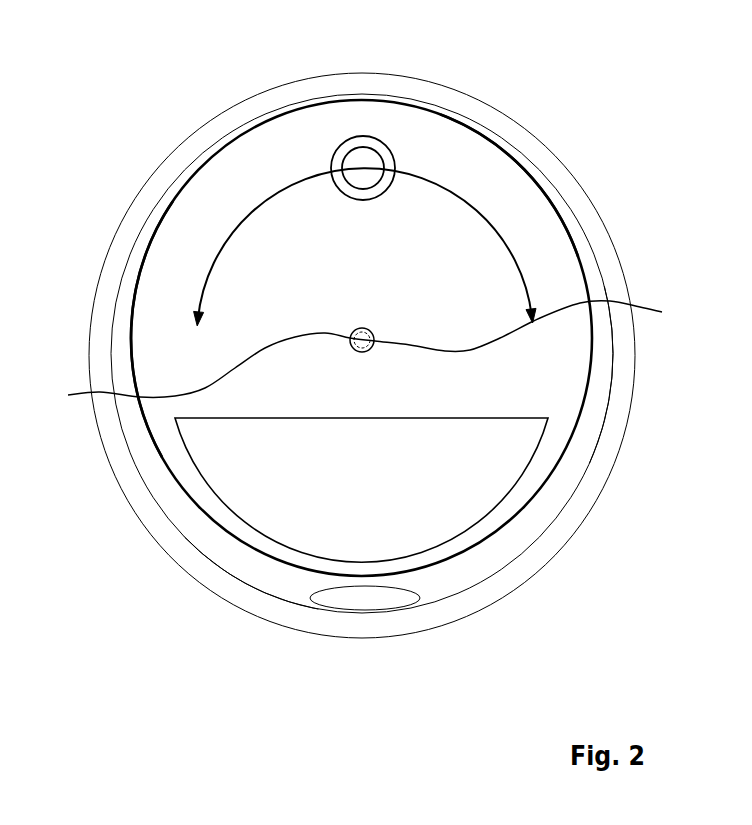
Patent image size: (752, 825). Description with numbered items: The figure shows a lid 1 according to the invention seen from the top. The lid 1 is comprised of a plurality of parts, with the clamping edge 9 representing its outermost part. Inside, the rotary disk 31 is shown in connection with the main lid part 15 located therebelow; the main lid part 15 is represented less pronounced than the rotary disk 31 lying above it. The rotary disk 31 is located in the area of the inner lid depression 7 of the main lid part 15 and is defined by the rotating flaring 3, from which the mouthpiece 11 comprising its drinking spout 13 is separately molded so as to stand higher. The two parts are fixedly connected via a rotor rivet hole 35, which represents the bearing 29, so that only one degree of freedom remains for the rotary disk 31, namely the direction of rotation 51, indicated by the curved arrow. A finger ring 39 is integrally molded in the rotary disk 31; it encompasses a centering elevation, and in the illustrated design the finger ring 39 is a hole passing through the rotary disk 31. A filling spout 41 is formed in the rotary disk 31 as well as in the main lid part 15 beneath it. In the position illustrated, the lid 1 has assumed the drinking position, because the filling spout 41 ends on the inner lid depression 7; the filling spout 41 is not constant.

The lid 1 is at (487, 573).
The rotating flaring 3 is at (553, 508).
The inner lid depression 7 is at (533, 222).
The clamping edge 9 is at (552, 547).
The mouthpiece 11 is at (295, 595).
The drinking spout 13 is at (360, 607).
The main lid part 15 is at (598, 395).
The bearing 29 is at (640, 307).
The rotary disk 31 is at (165, 252).
The rotor rivet hole 35 is at (354, 357).
The finger ring 39 is at (350, 148).
The filling spout 41 is at (475, 477).
The direction of rotation 51 is at (458, 193).